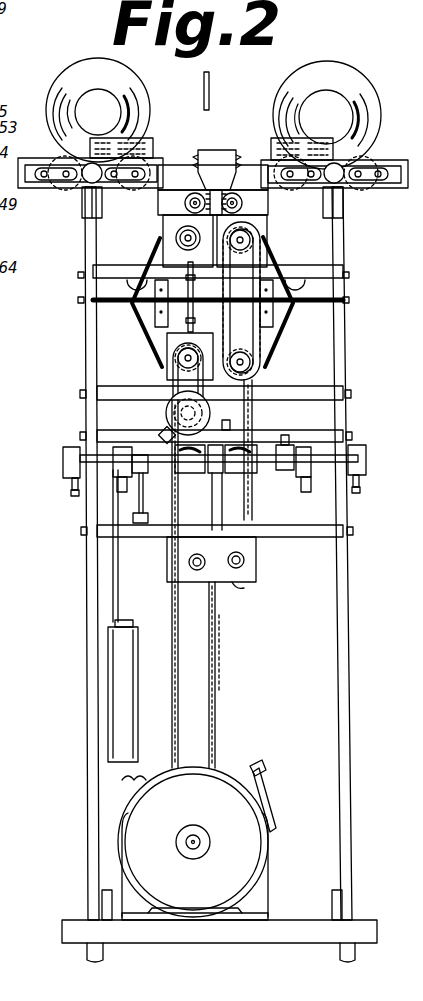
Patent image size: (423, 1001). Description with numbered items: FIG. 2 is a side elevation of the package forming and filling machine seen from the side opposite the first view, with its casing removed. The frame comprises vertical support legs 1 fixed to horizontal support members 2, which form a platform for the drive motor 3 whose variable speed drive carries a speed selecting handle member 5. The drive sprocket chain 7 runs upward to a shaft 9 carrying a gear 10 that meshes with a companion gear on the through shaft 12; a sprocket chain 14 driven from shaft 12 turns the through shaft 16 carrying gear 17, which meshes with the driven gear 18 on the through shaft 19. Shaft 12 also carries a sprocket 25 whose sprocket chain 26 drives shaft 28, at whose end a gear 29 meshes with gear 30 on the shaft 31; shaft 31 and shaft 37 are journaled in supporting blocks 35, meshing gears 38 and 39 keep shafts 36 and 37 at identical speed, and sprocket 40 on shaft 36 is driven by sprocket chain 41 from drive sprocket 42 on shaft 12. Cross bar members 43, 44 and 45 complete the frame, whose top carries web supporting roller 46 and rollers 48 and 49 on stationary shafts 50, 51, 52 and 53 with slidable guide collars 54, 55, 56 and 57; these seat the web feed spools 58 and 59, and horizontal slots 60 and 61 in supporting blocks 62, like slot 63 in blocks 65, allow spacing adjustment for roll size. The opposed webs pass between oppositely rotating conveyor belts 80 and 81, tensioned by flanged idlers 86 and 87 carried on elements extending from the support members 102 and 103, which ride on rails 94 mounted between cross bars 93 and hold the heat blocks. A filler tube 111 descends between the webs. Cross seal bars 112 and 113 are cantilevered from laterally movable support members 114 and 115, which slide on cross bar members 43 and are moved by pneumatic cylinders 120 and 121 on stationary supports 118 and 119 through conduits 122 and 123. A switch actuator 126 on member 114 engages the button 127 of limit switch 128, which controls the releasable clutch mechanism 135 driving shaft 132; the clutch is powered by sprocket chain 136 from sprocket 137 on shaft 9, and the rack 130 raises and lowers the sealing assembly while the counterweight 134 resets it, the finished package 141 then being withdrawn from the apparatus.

The vertical support legs 1 is at (90, 764).
The horizontal support members 2 is at (97, 203).
The drive motor 3 is at (240, 833).
The speed selecting handle member 5 is at (262, 783).
The drive sprocket chain 7 is at (216, 726).
The rotatable shaft 9 is at (178, 360).
The gear 10 is at (180, 372).
The through shaft 12 is at (280, 350).
The sprocket chain 14 is at (250, 515).
The through shaft 16 is at (246, 560).
The gear 17 is at (246, 588).
The driven gear 18 is at (196, 585).
The rotatable through shaft 19 is at (190, 563).
The sprocket 25 is at (263, 380).
The sprocket chain 26 is at (292, 346).
The shaft 28 is at (245, 203).
The gear 29 is at (234, 184).
The gear 30 is at (205, 165).
The shaft 31 is at (185, 203).
The supporting blocks 35 is at (173, 222).
The shaft 36 is at (262, 237).
The shaft 37 is at (167, 237).
The gear 38 is at (265, 250).
The gear 39 is at (180, 246).
The sprocket 40 is at (340, 272).
The sprocket chain 41 is at (366, 281).
The drive sprocket 42 is at (300, 392).
The cross bar members 43 is at (107, 535).
The cross bar member 44 is at (108, 396).
The cross bar member 45 is at (95, 290).
The web supporting roller 46 is at (360, 185).
The support roller 48 is at (128, 186).
The support roller 49 is at (56, 178).
The stationary shaft 50 is at (363, 170).
The stationary shaft 51 is at (292, 173).
The stationary shaft 52 is at (135, 170).
The stationary shaft 53 is at (67, 178).
The slidable guide collar 54 is at (357, 188).
The slidable guide collar 55 is at (282, 172).
The slidable guide collar 56 is at (203, 190).
The slidable guide collar 57 is at (63, 160).
The web feed spool 58 is at (332, 98).
The feed spool 59 is at (118, 102).
The horizontal slot 60 is at (372, 175).
The horizontal slot 61 is at (311, 183).
The supporting blocks 62 is at (353, 190).
The slot 63 is at (117, 187).
The blocks 65 is at (100, 150).
The conveyor belts 80 is at (340, 318).
The conveyor belt 81 is at (148, 314).
The flanged idler 86 is at (342, 300).
The flanged idler 87 is at (140, 300).
The cross bars 93 is at (100, 300).
The rails 94 is at (130, 306).
The stationary support member 102 is at (296, 308).
The stationary support member 103 is at (165, 290).
The filler tube 111 is at (210, 90).
The cross seal bar 112 is at (255, 495).
The cross seal bar 113 is at (191, 478).
The laterally movable support member 114 is at (146, 478).
The laterally movable support member 115 is at (300, 486).
The stationary support 118 is at (284, 448).
The stationary support 119 is at (140, 470).
The pneumatic cylinder 120 is at (355, 457).
The pneumatic cylinder 121 is at (95, 450).
The conduit 122 is at (72, 486).
The conduit 123 is at (112, 483).
The switch actuator 126 is at (256, 510).
The button 127 is at (205, 505).
The limit switch 128 is at (207, 523).
The rack 130 is at (230, 445).
The shaft 132 is at (165, 411).
The counterweight 134 is at (120, 676).
The releasable clutch mechanism 135 is at (243, 382).
The sprocket chain 136 is at (160, 352).
The sprocket 137 is at (181, 304).
The finished package 141 is at (222, 620).